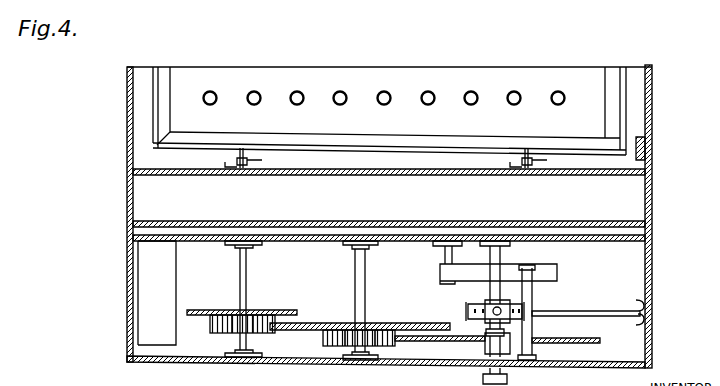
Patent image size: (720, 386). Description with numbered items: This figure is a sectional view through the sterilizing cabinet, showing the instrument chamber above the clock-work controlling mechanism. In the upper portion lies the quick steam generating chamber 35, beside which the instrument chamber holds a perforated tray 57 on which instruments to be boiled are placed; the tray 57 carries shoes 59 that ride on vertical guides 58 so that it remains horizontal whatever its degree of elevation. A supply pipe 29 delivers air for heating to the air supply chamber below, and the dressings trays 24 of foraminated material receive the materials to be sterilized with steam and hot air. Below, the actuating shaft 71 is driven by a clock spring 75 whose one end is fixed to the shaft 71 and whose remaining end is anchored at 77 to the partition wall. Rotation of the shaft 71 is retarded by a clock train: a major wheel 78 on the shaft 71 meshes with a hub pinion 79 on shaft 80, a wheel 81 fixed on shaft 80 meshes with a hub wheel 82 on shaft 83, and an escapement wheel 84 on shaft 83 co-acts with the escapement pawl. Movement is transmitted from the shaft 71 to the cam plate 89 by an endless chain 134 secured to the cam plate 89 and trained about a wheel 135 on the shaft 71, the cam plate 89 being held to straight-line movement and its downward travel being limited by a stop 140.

The quick steam generating chamber 35 is at (650, 205).
The tray 57 is at (338, 72).
The vertical guides 58 is at (225, 167).
The shoes 59 is at (262, 160).
The supply pipe 29 is at (150, 272).
The shaft 83 is at (246, 298).
The hub wheel 82 is at (225, 326).
The escapement wheel 84 is at (287, 318).
The shaft 80 is at (366, 302).
The wheel 81 is at (386, 328).
The hub pinion 79 is at (395, 342).
The spring anchor 77 is at (445, 260).
The actuating shaft 71 is at (502, 266).
The clock spring 75 is at (556, 272).
The endless chain 134 is at (468, 310).
The wheel 135 is at (488, 306).
The cam plate 89 is at (533, 296).
The stop 140 is at (585, 311).
The major wheel 78 is at (600, 341).
The trays 24 is at (507, 380).